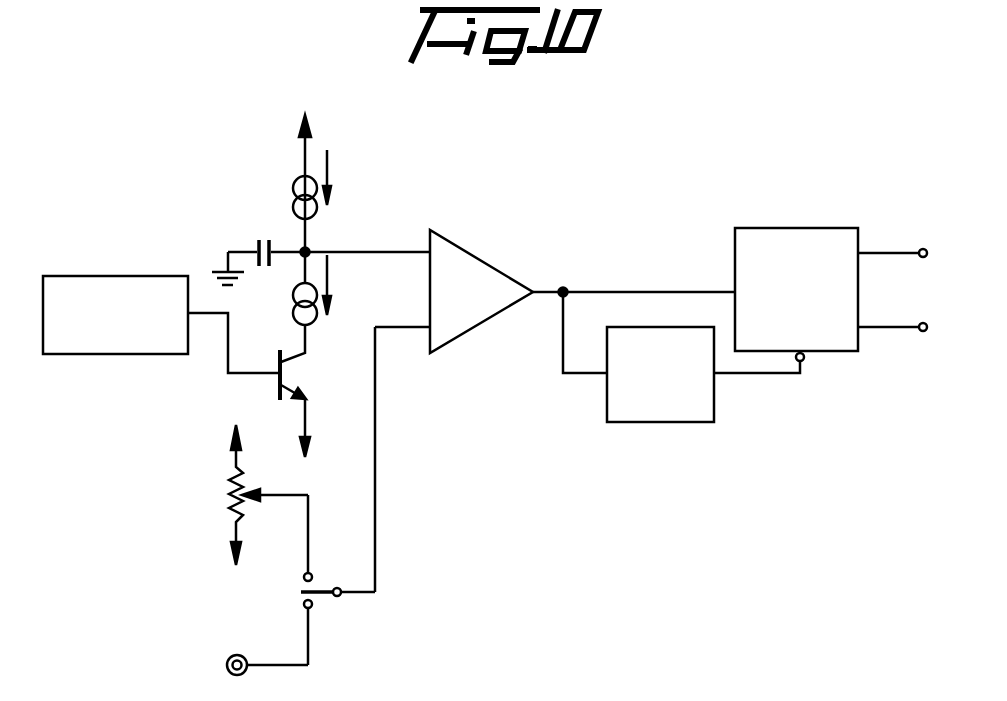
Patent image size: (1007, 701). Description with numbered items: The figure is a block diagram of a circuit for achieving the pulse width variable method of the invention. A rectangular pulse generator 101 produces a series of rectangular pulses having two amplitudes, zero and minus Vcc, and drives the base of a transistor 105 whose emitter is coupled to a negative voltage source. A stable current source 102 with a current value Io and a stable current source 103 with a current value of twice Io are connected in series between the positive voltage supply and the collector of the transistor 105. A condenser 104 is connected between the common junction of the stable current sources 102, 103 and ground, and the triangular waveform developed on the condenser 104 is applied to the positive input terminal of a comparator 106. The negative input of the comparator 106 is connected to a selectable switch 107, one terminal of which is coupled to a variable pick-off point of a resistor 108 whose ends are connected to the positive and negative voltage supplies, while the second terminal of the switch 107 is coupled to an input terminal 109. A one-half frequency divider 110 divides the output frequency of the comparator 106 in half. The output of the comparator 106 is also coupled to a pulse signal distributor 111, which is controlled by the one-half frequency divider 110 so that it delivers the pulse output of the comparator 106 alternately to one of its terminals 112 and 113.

The rectangular pulse generator 101 is at (121, 275).
The stable current source 102 is at (296, 178).
The stable current source 103 is at (295, 304).
The condenser 104 is at (258, 238).
The transistor 105 is at (276, 380).
The comparator 106 is at (480, 256).
The selectable switch 107 is at (314, 584).
The resistor 108 is at (232, 493).
The input terminal 109 is at (226, 662).
The one-half frequency divider 110 is at (637, 424).
The pulse signal distributor 111 is at (783, 227).
The terminal 112 is at (920, 257).
The terminal 113 is at (920, 331).